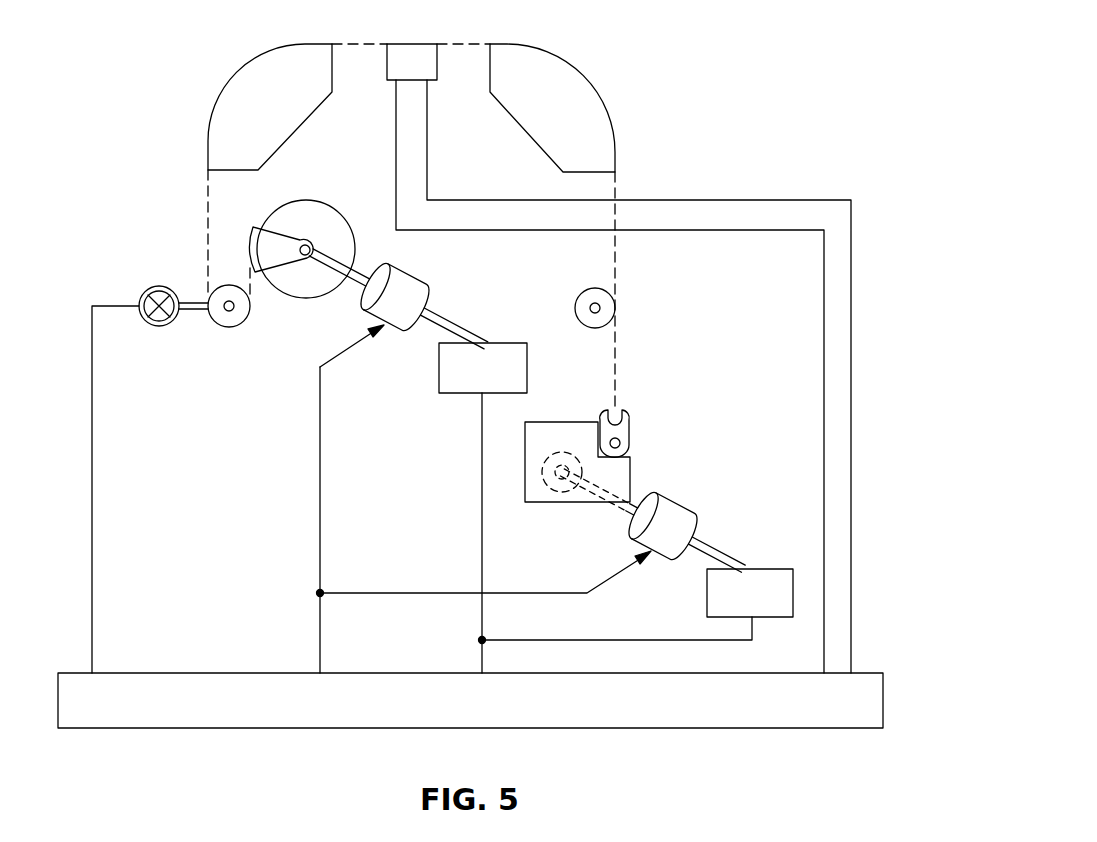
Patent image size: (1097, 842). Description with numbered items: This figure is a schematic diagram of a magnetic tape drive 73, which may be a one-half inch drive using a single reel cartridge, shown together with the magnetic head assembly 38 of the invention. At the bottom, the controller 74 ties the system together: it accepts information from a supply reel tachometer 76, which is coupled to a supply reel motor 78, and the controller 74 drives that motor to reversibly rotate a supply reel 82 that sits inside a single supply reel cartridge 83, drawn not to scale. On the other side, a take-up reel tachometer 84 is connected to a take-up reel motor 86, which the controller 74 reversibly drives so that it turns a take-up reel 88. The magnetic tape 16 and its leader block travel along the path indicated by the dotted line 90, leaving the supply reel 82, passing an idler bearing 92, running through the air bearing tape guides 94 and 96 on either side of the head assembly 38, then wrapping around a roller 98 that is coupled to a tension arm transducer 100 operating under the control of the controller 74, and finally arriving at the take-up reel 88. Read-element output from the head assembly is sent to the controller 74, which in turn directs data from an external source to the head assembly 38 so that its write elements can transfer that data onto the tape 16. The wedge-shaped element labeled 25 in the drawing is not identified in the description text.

The magnetic tape 16 is at (633, 473).
The film take-up wedge 25 is at (255, 240).
The magnetic head assembly 38 is at (437, 63).
The magnetic tape drive 73 is at (703, 128).
The controller 74 is at (678, 712).
The supply reel tachometer 76 is at (707, 600).
The supply reel motor 78 is at (683, 502).
The supply reel 82 is at (572, 450).
The supply reel cartridge 83 is at (543, 503).
The take-up reel tachometer 84 is at (439, 374).
The take-up reel motor 86 is at (423, 282).
The take-up reel 88 is at (333, 208).
The tape path 90 is at (615, 261).
The idler bearing 92 is at (576, 300).
The air bearing tape guide 94 is at (585, 82).
The air bearing tape guide 96 is at (233, 90).
The roller 98 is at (230, 327).
The tension arm transducer 100 is at (153, 286).